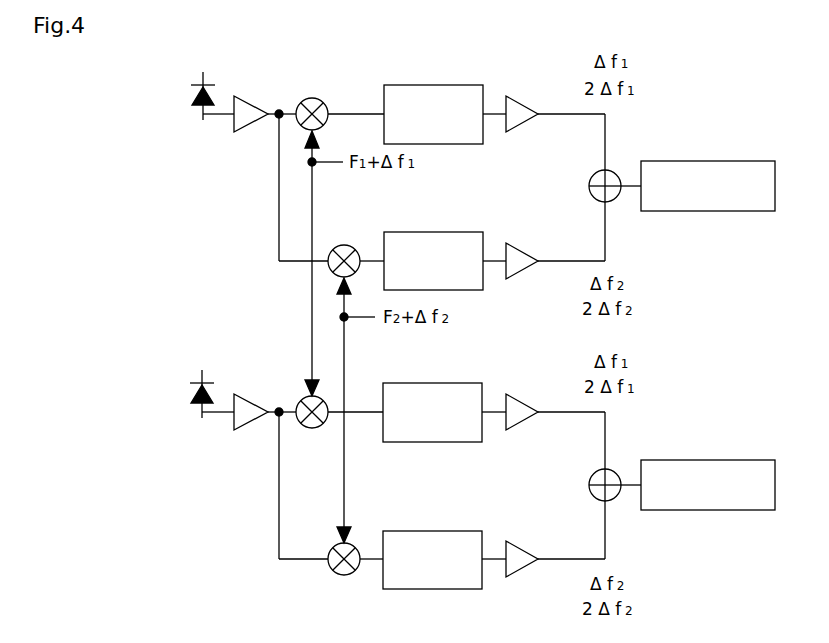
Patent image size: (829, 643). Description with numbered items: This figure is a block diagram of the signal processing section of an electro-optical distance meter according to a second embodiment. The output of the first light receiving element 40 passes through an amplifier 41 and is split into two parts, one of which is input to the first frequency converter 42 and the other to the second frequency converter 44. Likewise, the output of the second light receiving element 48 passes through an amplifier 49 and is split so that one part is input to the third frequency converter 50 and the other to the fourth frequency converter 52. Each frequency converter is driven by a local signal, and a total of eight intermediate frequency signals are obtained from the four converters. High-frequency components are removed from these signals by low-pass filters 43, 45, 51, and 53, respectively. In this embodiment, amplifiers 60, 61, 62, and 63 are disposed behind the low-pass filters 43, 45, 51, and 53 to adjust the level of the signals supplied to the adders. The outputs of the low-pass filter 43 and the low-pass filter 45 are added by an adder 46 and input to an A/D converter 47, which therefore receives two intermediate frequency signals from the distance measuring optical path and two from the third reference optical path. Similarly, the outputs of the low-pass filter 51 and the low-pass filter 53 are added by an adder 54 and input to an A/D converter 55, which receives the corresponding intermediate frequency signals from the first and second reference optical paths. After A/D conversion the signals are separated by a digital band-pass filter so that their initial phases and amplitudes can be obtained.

The first light receiving element 40 is at (188, 93).
The amplifier 41 is at (248, 93).
The first frequency converter 42 is at (318, 99).
The low-pass filter 43 is at (435, 85).
The second frequency converter 44 is at (352, 247).
The low-pass filter 45 is at (432, 232).
The adder 46 is at (615, 172).
The A/D converter 47 is at (700, 161).
The second light receiving element 48 is at (187, 391).
The amplifier 49 is at (248, 392).
The third frequency converter 50 is at (315, 428).
The low-pass filter 51 is at (433, 383).
The fourth frequency converter 52 is at (346, 576).
The low-pass filter 53 is at (432, 531).
The adder 54 is at (615, 470).
The A/D converter 55 is at (700, 460).
The amplifier 60 is at (542, 90).
The amplifier 61 is at (522, 253).
The amplifier 62 is at (541, 388).
The amplifier 63 is at (541, 535).